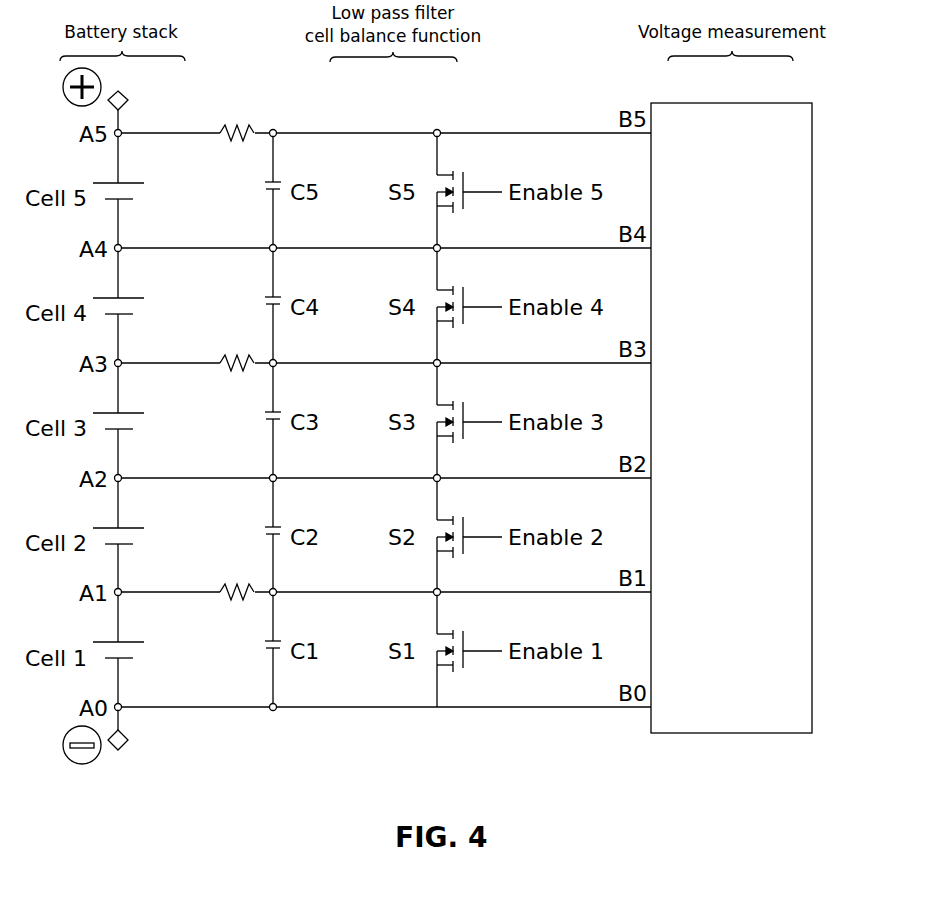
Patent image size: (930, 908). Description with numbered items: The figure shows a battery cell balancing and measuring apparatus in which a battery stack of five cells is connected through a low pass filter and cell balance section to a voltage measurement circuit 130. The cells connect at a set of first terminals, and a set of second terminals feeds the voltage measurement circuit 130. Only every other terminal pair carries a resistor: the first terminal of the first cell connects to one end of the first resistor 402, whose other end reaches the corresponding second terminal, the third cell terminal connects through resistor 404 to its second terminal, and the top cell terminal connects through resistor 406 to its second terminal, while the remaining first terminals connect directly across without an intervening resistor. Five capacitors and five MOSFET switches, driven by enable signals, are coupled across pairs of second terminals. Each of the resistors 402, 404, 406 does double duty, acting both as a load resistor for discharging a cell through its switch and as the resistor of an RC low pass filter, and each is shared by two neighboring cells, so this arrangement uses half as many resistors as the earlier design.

The voltage measurement circuit 130 is at (732, 733).
The first resistor 402 is at (232, 600).
The resistor 404 is at (232, 371).
The resistor 406 is at (232, 141).